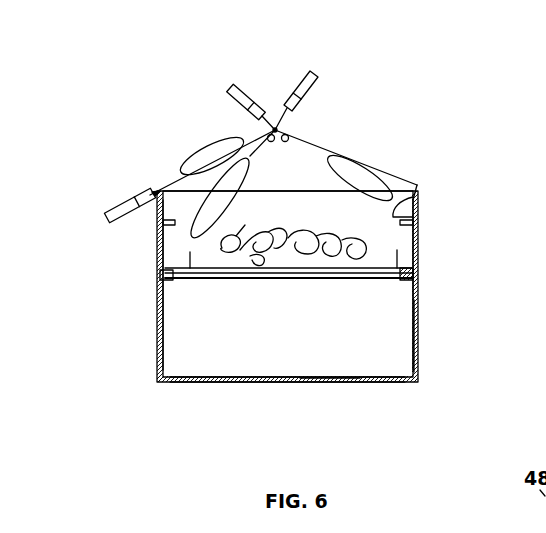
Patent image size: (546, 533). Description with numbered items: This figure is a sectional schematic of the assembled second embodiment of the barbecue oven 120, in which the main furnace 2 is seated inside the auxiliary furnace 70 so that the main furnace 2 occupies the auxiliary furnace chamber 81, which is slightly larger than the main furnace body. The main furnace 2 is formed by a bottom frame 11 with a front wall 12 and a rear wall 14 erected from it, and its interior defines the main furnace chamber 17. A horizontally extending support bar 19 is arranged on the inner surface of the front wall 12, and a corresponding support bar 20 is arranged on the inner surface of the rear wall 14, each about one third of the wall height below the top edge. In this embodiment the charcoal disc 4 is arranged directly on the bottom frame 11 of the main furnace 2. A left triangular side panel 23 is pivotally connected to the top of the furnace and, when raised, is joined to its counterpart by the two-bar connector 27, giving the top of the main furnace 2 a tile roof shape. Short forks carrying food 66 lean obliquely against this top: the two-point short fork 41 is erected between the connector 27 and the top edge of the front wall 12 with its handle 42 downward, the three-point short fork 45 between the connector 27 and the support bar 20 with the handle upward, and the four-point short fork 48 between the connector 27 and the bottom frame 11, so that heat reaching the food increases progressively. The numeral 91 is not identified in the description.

The main furnace 2 is at (420, 250).
The charcoal disc 4 is at (320, 280).
The bottom frame 11 is at (370, 280).
The front wall 12 is at (157, 247).
The rear wall 14 is at (420, 235).
The main furnace chamber 17 is at (237, 240).
The support bar 19 is at (157, 213).
The support bar 20 is at (420, 203).
The left triangular side panel 23 is at (302, 140).
The two-bar connector 27 is at (262, 138).
The two-point short fork 41 is at (167, 180).
The handle 42 is at (113, 192).
The three-point short fork 45 is at (295, 158).
The four-point short fork 48 is at (272, 110).
The food 66 is at (200, 170).
The auxiliary furnace 70 is at (373, 357).
The auxiliary furnace chamber 81 is at (242, 345).
The element 91 is at (512, 532).
The barbecue oven 120 is at (376, 93).